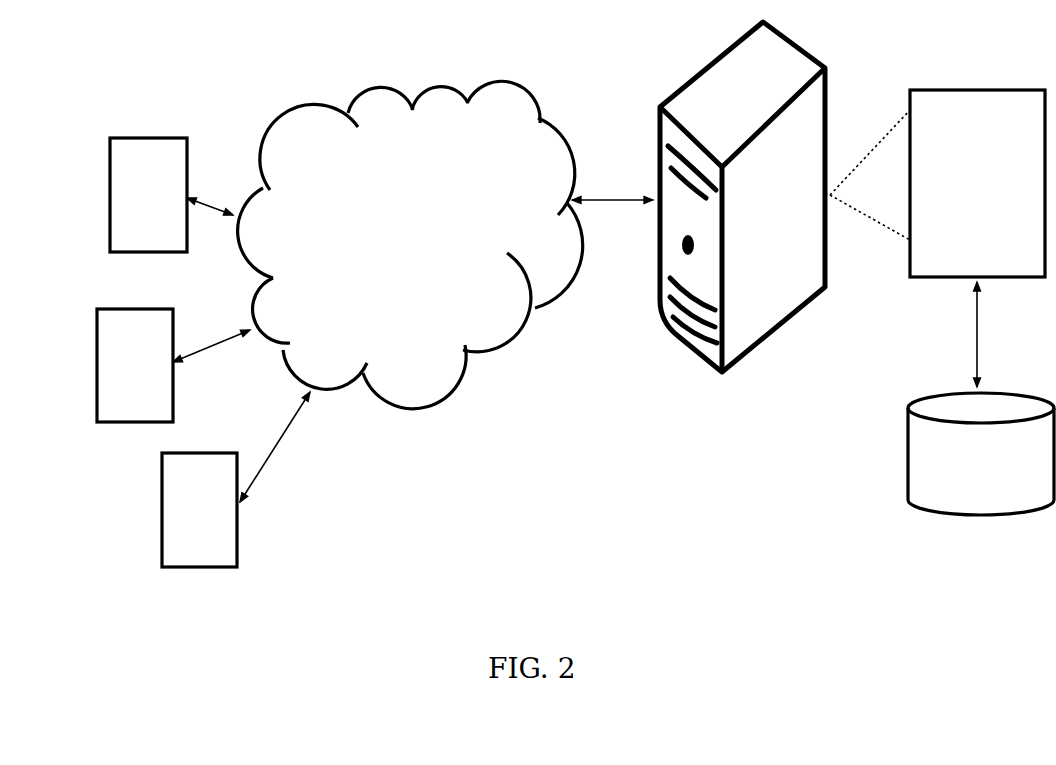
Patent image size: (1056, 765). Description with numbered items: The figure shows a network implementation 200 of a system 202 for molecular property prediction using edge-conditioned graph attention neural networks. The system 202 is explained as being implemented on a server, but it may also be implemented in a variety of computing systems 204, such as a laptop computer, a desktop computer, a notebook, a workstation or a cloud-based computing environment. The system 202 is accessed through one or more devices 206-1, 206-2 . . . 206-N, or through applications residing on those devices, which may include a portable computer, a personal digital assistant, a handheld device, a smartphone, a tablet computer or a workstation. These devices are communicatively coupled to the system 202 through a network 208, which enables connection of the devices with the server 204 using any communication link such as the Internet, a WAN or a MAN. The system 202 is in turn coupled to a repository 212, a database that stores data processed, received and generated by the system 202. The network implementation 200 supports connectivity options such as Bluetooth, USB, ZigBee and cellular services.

The network implementation 200 is at (561, 459).
The system 202 is at (950, 90).
The computing device 204 is at (822, 70).
The device 206-1 is at (147, 138).
The device 206-2 is at (133, 422).
The device 206-N is at (195, 567).
The network 208 is at (410, 244).
The repository 212 is at (905, 450).